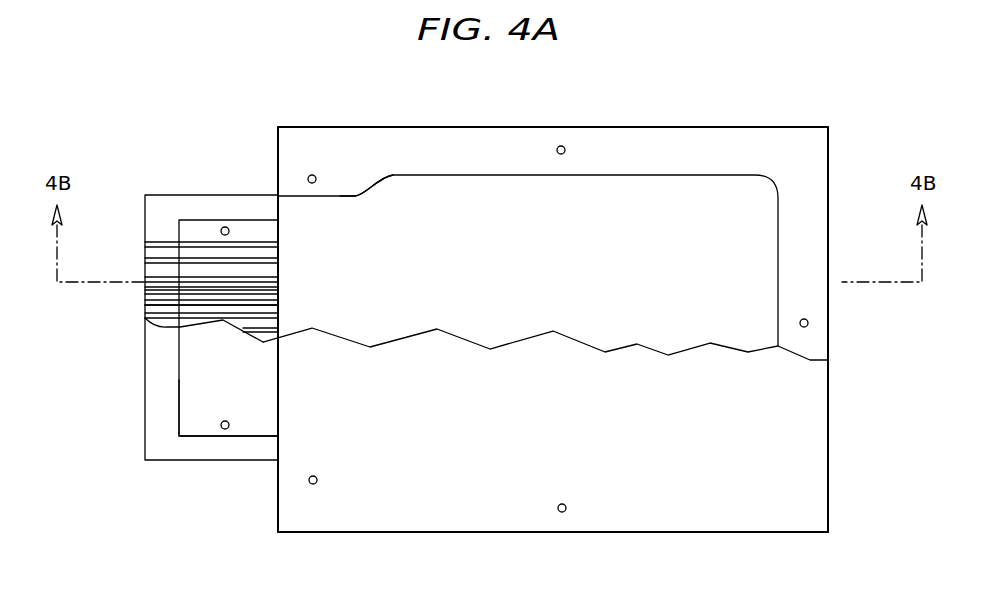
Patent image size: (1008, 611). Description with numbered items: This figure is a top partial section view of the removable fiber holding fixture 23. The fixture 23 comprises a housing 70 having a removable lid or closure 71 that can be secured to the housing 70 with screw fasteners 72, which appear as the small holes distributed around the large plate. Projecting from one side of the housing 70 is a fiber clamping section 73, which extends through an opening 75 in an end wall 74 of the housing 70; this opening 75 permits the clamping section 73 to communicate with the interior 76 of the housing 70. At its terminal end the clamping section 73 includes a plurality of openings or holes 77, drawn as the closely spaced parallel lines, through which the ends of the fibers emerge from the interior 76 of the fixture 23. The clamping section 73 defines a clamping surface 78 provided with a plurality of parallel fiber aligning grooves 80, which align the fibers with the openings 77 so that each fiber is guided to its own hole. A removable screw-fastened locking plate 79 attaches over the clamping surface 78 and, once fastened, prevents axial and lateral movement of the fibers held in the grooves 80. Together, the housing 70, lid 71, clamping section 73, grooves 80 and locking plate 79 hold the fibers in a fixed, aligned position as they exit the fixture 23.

The removable fiber holding fixture 23 is at (417, 121).
The housing 70 is at (831, 150).
The removable lid or closure 71 is at (828, 470).
The screw fasteners 72 is at (561, 146).
The fiber clamping section 73 is at (190, 195).
The end wall 74 is at (278, 508).
The opening 75 is at (340, 205).
The interior 76 is at (708, 213).
The openings or holes 77 is at (145, 242).
The clamping surface 78 is at (252, 230).
The locking plate 79 is at (202, 392).
The fiber aligning grooves 80 is at (225, 275).